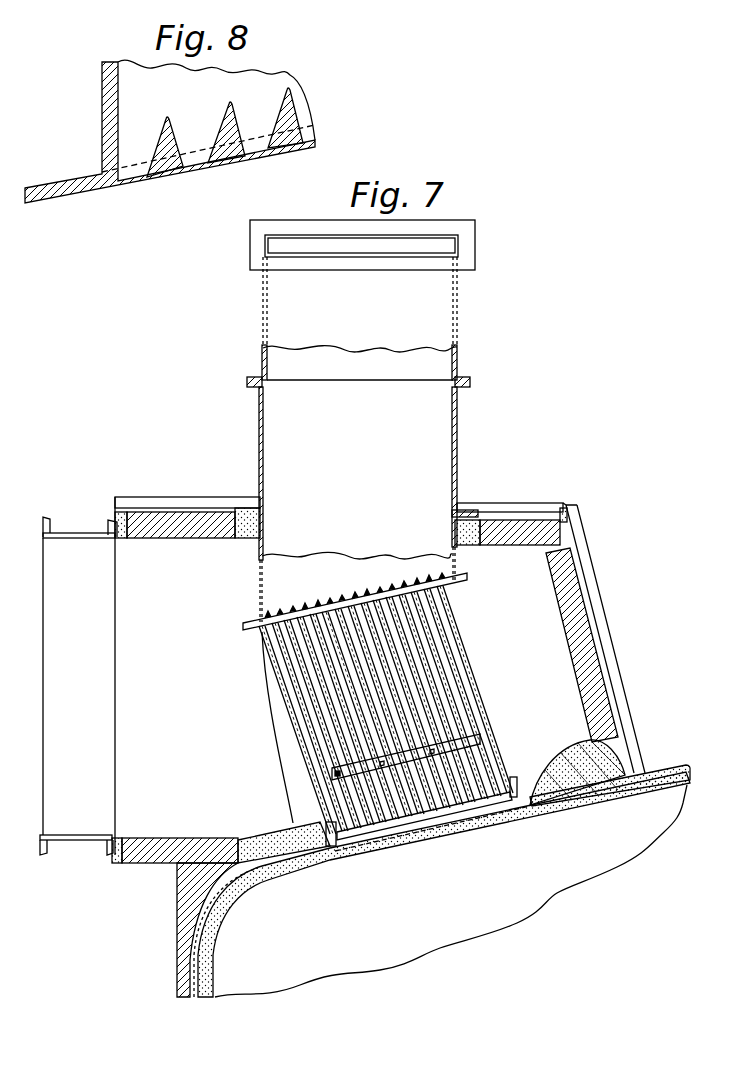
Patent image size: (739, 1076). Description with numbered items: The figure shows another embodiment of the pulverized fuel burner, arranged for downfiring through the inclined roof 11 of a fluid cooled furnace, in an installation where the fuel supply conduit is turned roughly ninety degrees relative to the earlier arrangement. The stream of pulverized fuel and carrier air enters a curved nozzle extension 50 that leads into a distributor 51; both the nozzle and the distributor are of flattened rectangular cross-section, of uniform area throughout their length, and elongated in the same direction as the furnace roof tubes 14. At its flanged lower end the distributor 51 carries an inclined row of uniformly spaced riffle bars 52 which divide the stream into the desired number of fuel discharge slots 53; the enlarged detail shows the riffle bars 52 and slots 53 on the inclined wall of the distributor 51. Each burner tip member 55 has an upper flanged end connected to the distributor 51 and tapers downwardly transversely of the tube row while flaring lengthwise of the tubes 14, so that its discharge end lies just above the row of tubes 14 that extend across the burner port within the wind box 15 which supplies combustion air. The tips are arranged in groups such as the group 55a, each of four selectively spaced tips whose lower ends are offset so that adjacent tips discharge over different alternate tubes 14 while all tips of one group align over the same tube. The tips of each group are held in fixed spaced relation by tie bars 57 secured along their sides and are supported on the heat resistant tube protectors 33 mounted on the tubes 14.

In FIG. 7, the inclined roof 11 is at (660, 773).
In FIG. 7, the fluid heating tubes 14 is at (432, 838).
In FIG. 7, the wind box 15 is at (592, 623).
In FIG. 7, the tube protectors 33 is at (462, 810).
In FIG. 7, the curved nozzle extension 50 is at (460, 358).
In FIG. 8, the distributor 51 is at (105, 117).
In FIG. 7, the distributor 51 is at (458, 480).
In FIG. 8, the riffle bars 52 is at (220, 125).
In FIG. 7, the riffle bars 52 is at (352, 597).
In FIG. 8, the fuel discharge slots 53 is at (136, 172).
In FIG. 7, the burner tip members 55 is at (470, 673).
In FIG. 7, the burner tip group 55a is at (503, 780).
In FIG. 7, the tie bars 57 is at (466, 738).